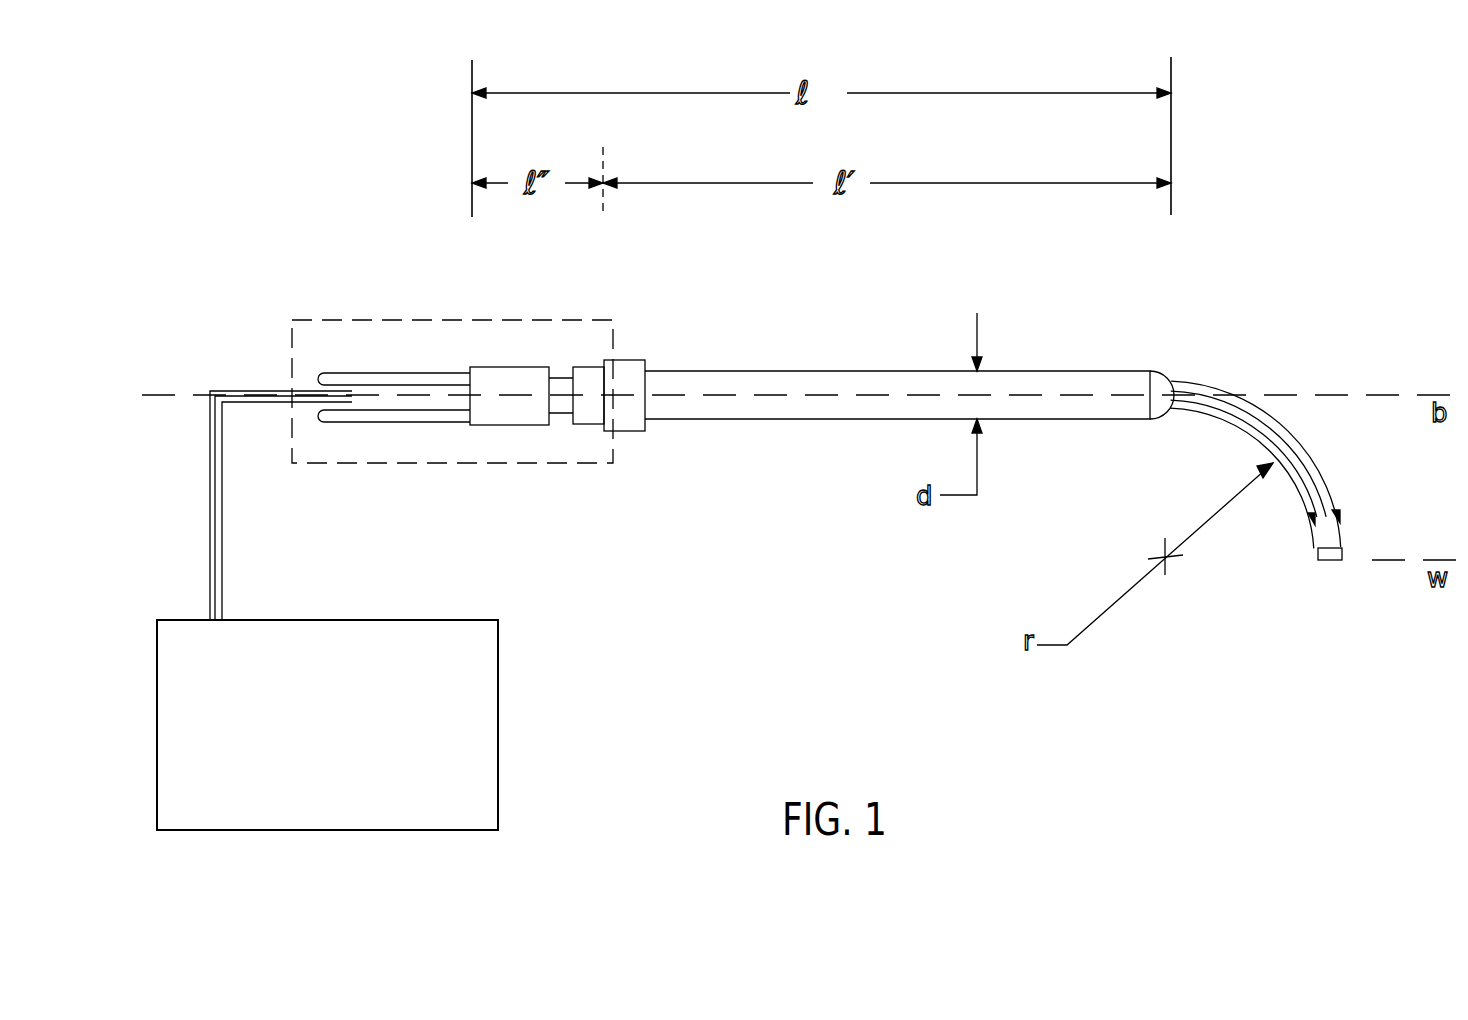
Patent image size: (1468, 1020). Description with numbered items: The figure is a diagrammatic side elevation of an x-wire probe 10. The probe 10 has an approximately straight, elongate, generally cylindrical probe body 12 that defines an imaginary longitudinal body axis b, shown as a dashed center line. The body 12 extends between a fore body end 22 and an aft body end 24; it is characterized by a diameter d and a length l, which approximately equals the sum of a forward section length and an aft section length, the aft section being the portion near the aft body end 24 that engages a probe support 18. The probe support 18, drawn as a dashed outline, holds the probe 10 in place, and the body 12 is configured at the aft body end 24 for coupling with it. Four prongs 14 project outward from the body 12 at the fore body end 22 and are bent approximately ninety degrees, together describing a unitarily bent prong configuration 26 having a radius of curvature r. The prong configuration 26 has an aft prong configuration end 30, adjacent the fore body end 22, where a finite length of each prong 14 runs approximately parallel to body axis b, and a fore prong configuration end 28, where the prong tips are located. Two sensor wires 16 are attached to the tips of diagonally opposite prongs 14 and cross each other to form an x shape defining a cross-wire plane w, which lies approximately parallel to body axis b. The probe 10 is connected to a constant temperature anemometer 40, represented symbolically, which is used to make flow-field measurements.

The x-wire probe 10 is at (1024, 453).
The probe body 12 is at (843, 370).
The prong 14 is at (1267, 413).
The sensor wire 16 is at (1338, 560).
The probe support 18 is at (468, 381).
The fore body end 22 is at (1157, 422).
The aft body end 24 is at (500, 428).
The prong configuration 26 is at (1252, 393).
The fore prong configuration end 28 is at (1315, 540).
The aft prong configuration end 30 is at (1180, 375).
The constant temperature anemometer 40 is at (327, 610).